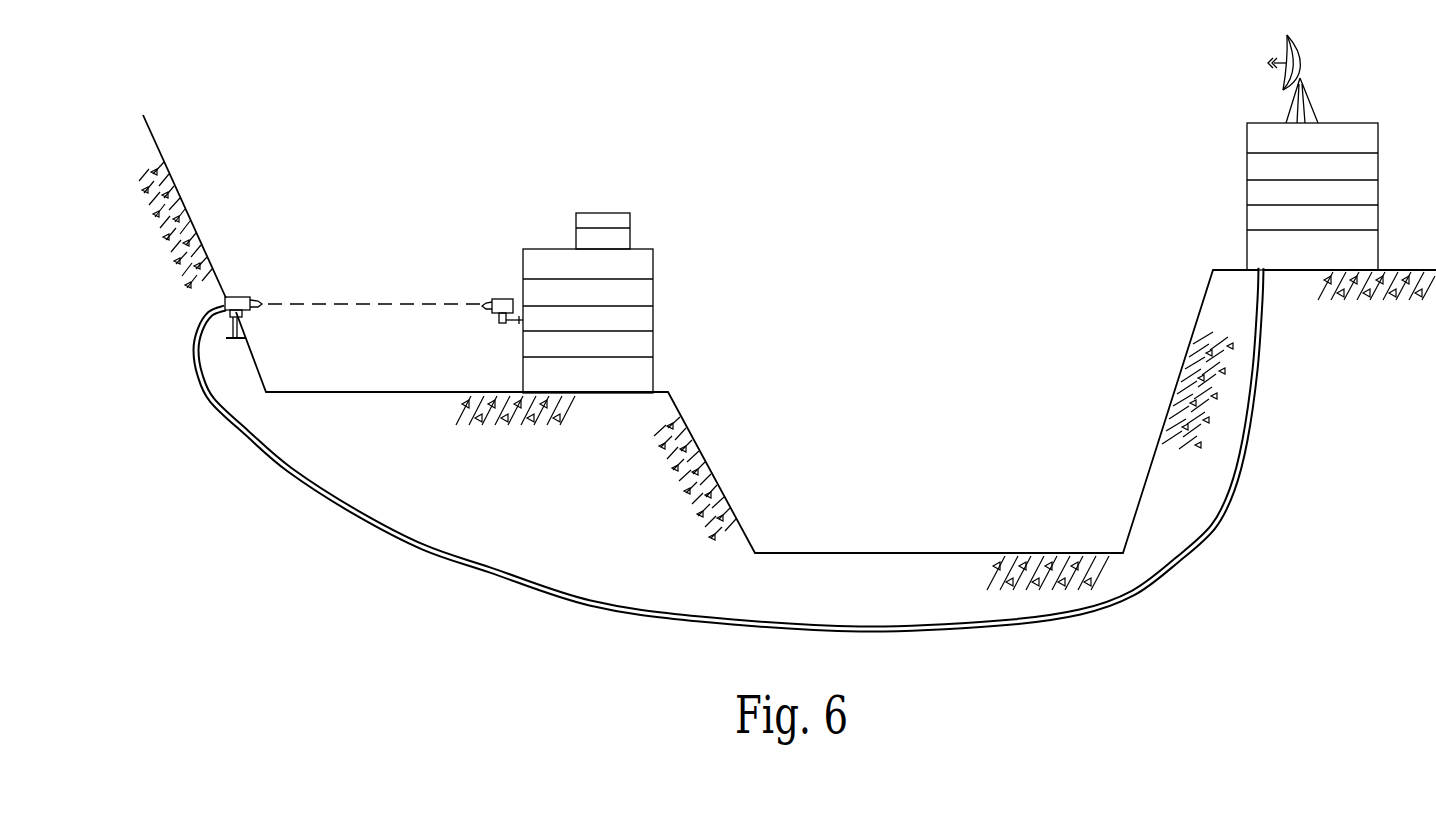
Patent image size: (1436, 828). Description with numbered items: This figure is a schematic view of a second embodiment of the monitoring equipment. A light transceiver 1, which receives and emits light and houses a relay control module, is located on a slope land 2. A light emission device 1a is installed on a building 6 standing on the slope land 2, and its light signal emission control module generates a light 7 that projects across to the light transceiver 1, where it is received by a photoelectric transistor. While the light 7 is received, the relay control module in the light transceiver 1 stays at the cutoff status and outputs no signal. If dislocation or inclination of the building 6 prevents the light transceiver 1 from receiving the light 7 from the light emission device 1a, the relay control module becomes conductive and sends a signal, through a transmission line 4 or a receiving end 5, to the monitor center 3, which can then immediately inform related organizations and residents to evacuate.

The light transceiver 1 is at (238, 297).
The light emission device 1a is at (503, 299).
The slope land 2 is at (156, 145).
The monitor center 3 is at (1350, 130).
The transmission line 4 is at (490, 572).
The receiving end 5 is at (1294, 50).
The building 6 is at (640, 262).
The light 7 is at (335, 302).